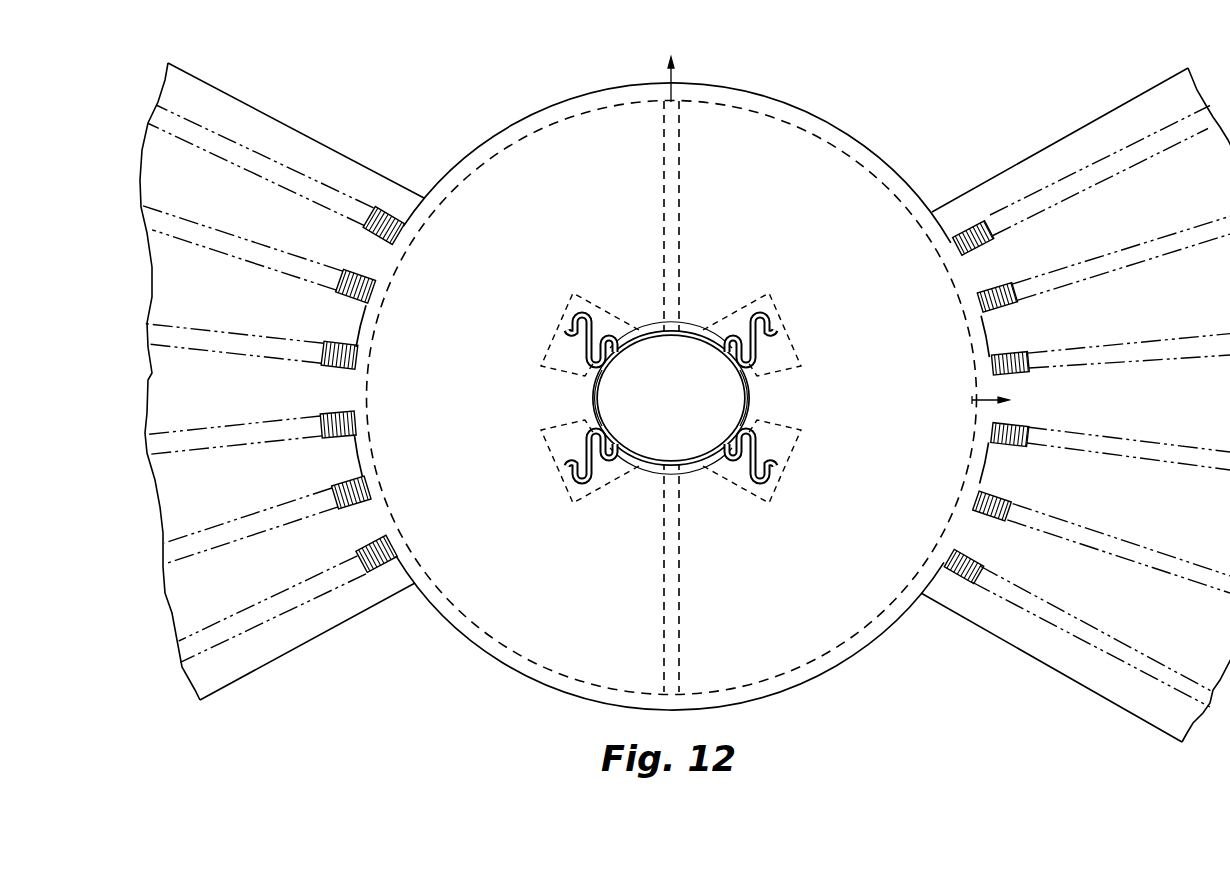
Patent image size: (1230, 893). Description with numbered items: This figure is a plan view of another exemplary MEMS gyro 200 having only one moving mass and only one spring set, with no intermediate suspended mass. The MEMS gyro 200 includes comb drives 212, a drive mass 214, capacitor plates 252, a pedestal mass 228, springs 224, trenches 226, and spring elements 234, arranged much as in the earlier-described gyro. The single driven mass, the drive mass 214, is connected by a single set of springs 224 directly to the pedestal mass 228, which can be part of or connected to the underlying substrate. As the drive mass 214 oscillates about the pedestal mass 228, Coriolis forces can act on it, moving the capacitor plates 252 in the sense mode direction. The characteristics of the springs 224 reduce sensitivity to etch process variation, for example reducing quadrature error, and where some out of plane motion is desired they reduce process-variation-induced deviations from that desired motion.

The MEMS gyro 200 is at (442, 106).
The comb drives 212 is at (256, 676).
The drive mass 214 is at (460, 626).
The springs 224 is at (581, 314).
The trenches 226 is at (693, 333).
The pedestal mass 228 is at (680, 453).
The spring elements 234 is at (672, 398).
The capacitor plates 252 is at (542, 128).